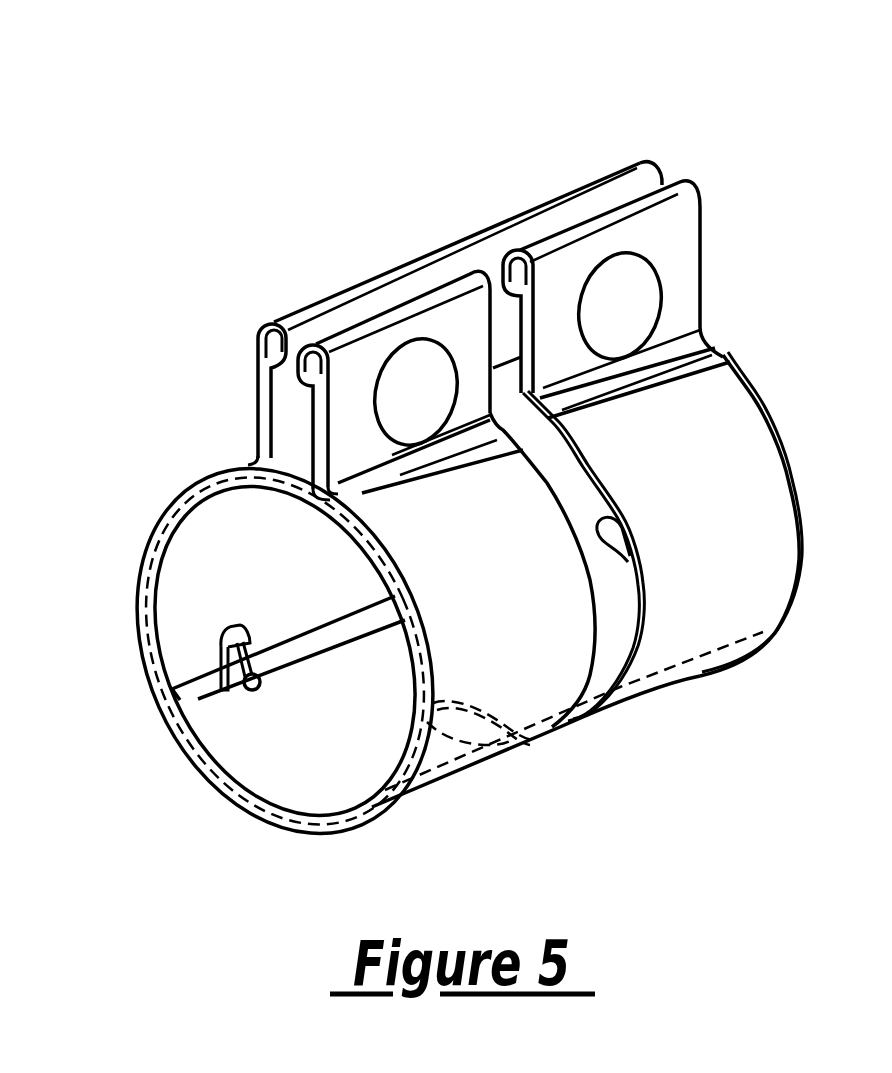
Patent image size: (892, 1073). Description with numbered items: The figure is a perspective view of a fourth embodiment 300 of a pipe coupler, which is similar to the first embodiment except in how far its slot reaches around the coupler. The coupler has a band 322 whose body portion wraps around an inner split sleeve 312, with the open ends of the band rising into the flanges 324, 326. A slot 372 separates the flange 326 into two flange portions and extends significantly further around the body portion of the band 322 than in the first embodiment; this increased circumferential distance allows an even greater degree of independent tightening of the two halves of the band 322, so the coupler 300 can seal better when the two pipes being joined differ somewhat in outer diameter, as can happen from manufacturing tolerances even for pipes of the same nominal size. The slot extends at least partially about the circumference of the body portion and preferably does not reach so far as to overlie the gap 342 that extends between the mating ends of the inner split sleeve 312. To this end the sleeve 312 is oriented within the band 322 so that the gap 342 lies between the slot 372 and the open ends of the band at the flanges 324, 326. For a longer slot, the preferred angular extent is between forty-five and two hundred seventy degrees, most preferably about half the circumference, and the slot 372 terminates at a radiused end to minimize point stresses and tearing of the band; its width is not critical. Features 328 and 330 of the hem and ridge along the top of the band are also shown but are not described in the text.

The fourth embodiment 300 is at (687, 134).
The inner split sleeve 312 is at (296, 765).
The band 322 is at (672, 681).
The flange 324 is at (236, 389).
The flange 326 is at (367, 467).
The band end hem 328 is at (258, 337).
The top ridge of clamp 330 is at (375, 317).
The gap 342 is at (196, 702).
The slot 372 is at (634, 560).